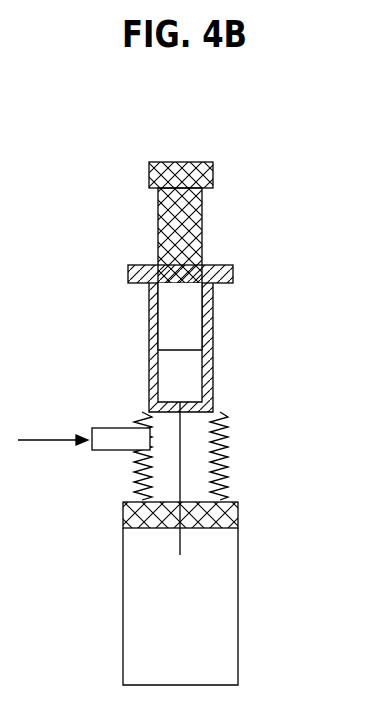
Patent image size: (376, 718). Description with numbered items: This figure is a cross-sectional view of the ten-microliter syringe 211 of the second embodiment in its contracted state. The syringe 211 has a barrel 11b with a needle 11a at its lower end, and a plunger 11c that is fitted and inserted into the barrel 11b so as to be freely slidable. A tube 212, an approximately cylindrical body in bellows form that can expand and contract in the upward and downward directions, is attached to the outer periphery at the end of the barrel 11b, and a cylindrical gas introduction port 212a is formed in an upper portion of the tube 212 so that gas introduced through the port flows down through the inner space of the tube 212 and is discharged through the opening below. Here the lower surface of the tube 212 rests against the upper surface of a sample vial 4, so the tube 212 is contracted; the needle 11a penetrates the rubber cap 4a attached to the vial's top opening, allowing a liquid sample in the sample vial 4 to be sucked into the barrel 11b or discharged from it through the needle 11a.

The 10 μl syringe 211 is at (182, 267).
The plunger 11c is at (158, 222).
The barrel 11b is at (149, 316).
The needle 11a is at (180, 468).
The gas introduction port 212a is at (112, 428).
The tube 212 is at (228, 452).
The cap 4a is at (238, 516).
The sample vial 4 is at (238, 610).